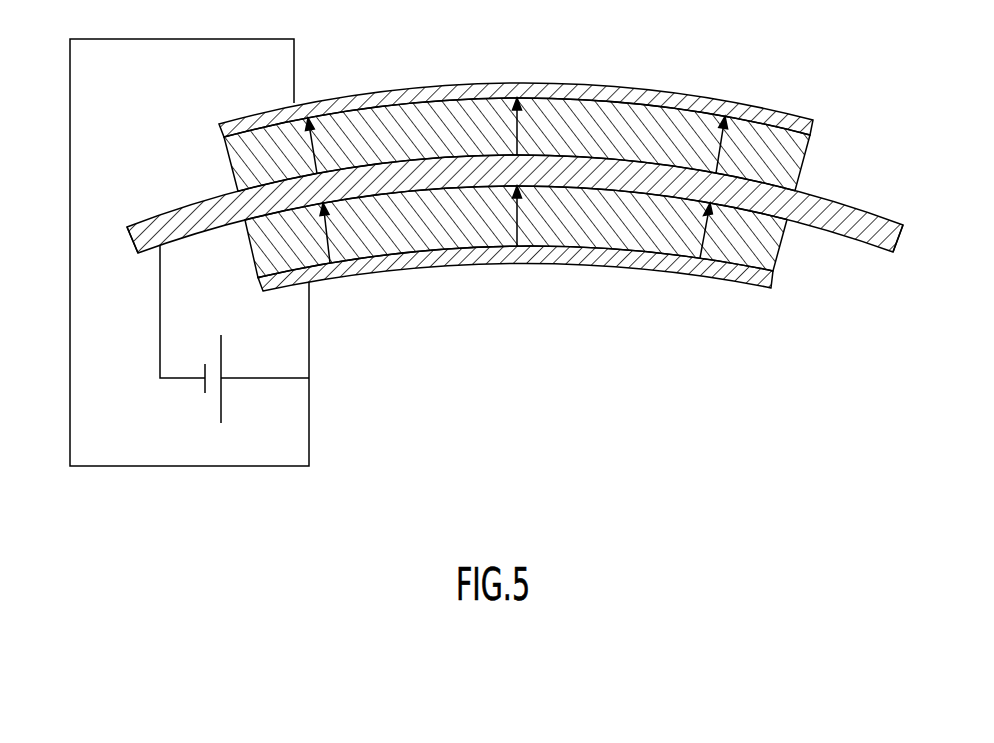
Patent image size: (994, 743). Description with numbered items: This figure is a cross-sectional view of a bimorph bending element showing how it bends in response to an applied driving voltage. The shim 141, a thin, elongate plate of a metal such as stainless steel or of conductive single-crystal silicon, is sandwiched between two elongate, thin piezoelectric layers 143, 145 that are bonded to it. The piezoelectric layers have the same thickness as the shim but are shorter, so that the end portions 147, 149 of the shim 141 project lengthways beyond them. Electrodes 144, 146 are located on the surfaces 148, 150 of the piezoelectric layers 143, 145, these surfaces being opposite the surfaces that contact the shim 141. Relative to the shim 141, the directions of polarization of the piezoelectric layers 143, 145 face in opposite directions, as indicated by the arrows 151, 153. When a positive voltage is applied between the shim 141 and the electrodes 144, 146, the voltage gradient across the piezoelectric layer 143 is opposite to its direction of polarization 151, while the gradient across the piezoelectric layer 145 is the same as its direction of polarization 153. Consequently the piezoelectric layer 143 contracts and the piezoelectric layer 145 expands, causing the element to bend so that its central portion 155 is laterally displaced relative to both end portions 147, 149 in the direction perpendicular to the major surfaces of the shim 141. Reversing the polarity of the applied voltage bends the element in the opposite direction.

The shim 141 is at (835, 217).
The piezoelectric layer 143 is at (655, 218).
The electrode 144 is at (575, 250).
The piezoelectric layer 145 is at (683, 133).
The electrode 146 is at (633, 92).
The end portion of the shim 147 is at (147, 250).
The surface of the piezoelectric layer 148 is at (700, 260).
The end portion of the shim 149 is at (877, 240).
The surface of the piezoelectric layer 150 is at (742, 115).
The direction of polarization 151 is at (515, 218).
The direction of polarization 153 is at (503, 118).
The central portion 155 is at (518, 84).